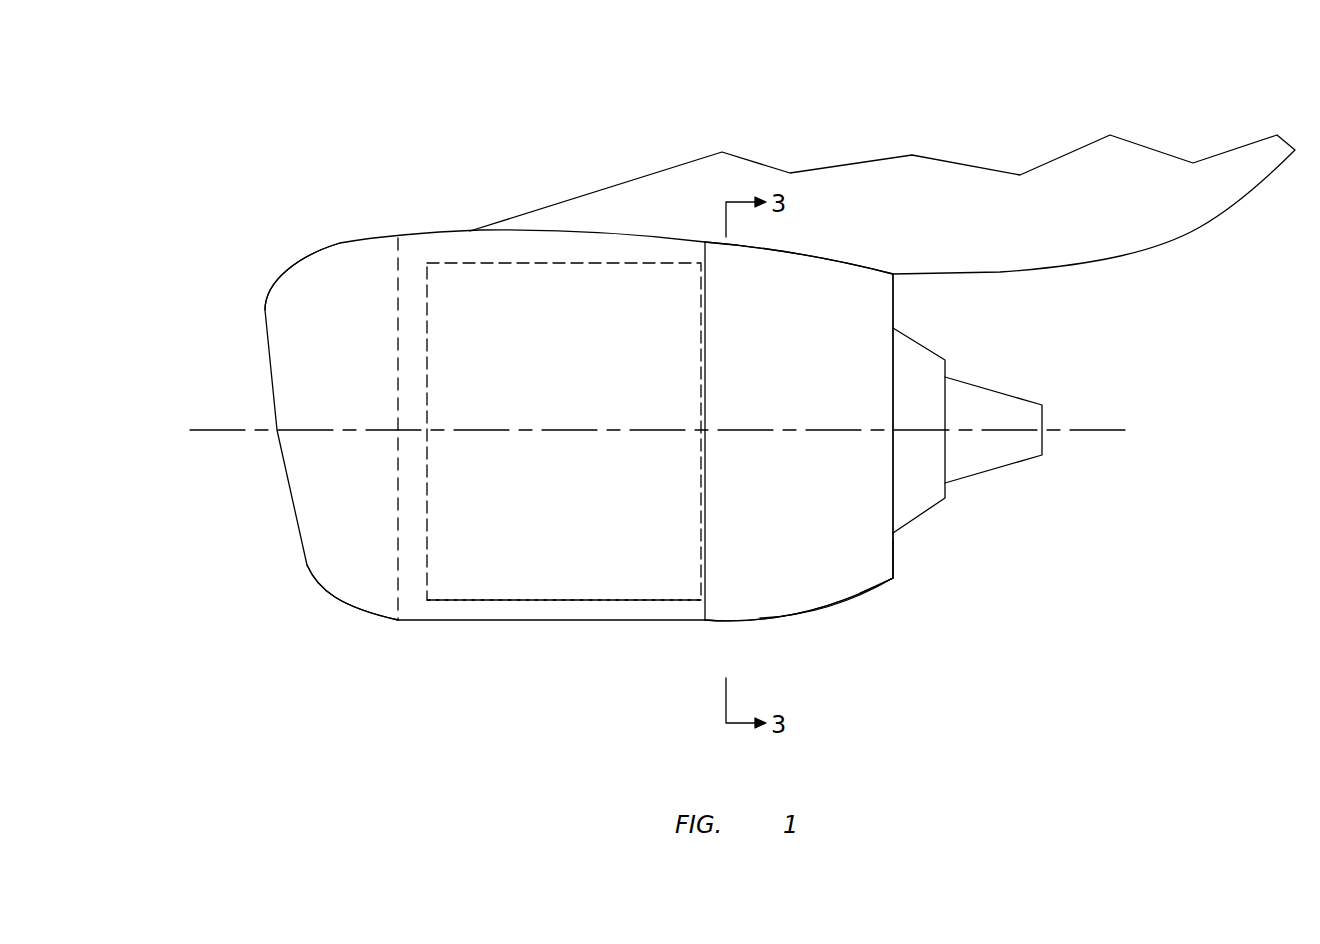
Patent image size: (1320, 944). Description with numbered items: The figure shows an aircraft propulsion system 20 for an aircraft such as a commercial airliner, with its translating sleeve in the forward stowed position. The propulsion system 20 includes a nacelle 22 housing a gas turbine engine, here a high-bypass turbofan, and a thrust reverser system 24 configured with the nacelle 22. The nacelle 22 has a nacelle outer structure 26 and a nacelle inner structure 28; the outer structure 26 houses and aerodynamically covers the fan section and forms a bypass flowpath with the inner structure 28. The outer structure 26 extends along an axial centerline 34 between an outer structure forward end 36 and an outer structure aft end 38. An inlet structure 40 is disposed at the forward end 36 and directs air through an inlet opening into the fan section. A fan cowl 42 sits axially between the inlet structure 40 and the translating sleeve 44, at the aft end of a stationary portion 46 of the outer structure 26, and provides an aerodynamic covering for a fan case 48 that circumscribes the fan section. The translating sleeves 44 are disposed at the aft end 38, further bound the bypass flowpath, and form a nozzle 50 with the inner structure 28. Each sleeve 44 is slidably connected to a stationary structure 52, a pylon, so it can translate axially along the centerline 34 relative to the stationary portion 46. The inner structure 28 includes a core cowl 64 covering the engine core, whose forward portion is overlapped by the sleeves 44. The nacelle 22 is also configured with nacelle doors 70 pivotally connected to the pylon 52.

The aircraft propulsion system 20 is at (305, 122).
The nacelle 22 is at (451, 220).
The thrust reverser system 24 is at (768, 630).
The nacelle outer structure 26 is at (448, 632).
The nacelle inner structure 28 is at (930, 516).
The axial centerline 34 is at (210, 432).
The outer structure forward end 36 is at (265, 308).
The outer structure aft end 38 is at (895, 298).
The inlet structure 40 is at (347, 593).
The fan cowl 42 is at (510, 612).
The translating sleeve 44 is at (817, 593).
The stationary portion 46 is at (705, 717).
The fan case 48 is at (582, 600).
The nozzle 50 is at (900, 563).
The stationary structure 52 is at (900, 160).
The core cowl 64 is at (935, 350).
The nacelle door 70 is at (796, 632).